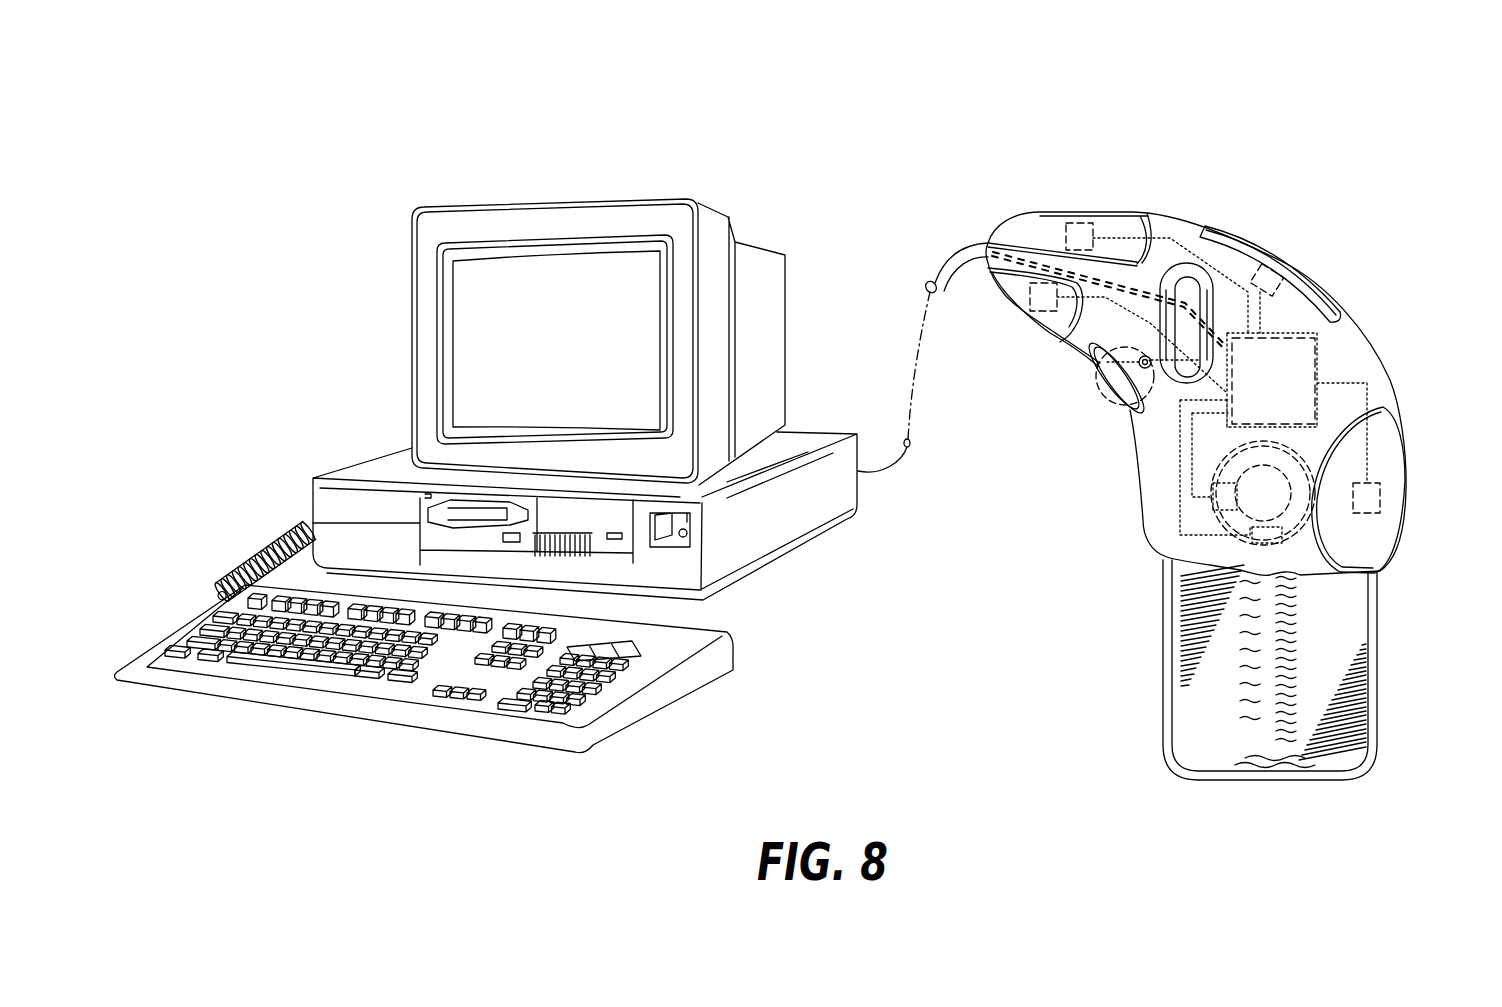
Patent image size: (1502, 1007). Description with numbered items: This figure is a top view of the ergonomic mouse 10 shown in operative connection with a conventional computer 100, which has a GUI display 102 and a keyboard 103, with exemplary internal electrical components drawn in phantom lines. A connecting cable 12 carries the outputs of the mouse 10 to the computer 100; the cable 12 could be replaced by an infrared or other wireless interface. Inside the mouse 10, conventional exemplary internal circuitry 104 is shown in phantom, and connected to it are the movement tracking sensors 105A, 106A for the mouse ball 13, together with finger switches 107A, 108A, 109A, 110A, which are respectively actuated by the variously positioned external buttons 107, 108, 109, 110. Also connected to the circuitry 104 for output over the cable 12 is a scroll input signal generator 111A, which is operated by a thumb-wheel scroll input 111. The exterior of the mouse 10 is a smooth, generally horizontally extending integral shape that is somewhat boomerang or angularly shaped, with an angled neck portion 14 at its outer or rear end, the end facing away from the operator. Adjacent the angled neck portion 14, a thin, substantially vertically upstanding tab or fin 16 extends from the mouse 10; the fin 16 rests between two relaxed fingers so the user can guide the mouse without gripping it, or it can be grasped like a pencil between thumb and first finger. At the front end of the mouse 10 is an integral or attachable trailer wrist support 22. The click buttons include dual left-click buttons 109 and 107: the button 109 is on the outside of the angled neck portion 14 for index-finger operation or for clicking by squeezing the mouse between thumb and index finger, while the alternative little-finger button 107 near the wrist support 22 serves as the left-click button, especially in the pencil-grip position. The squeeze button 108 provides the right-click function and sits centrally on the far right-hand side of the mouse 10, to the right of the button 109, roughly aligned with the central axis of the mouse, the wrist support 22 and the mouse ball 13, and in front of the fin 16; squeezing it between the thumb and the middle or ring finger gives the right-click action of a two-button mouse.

The conventional computer 100 is at (338, 243).
The GUI display 102 is at (547, 300).
The keyboard 103 is at (647, 663).
The mouse 10 is at (1360, 207).
The cable 12 is at (947, 258).
The mouse ball 13 is at (1260, 493).
The angled neck portion 14 is at (1147, 273).
The fin 16 is at (1187, 293).
The wrist support 22 is at (1263, 707).
The internal circuitry 104 is at (1313, 359).
The movement tracking sensor 105A is at (1333, 543).
The movement tracking sensor 106A is at (1213, 500).
The little-finger button 107 is at (1400, 507).
The finger switch 107A is at (1381, 493).
The squeeze button 108 is at (1233, 247).
The finger switch 108A is at (1288, 265).
The left click button 109 is at (1028, 227).
The finger switch 109A is at (1080, 222).
The button 110 is at (1007, 292).
The finger switch 110A is at (1033, 307).
The thumb-wheel scroll input 111 is at (1100, 392).
The scroll input signal generator 111A is at (1107, 362).